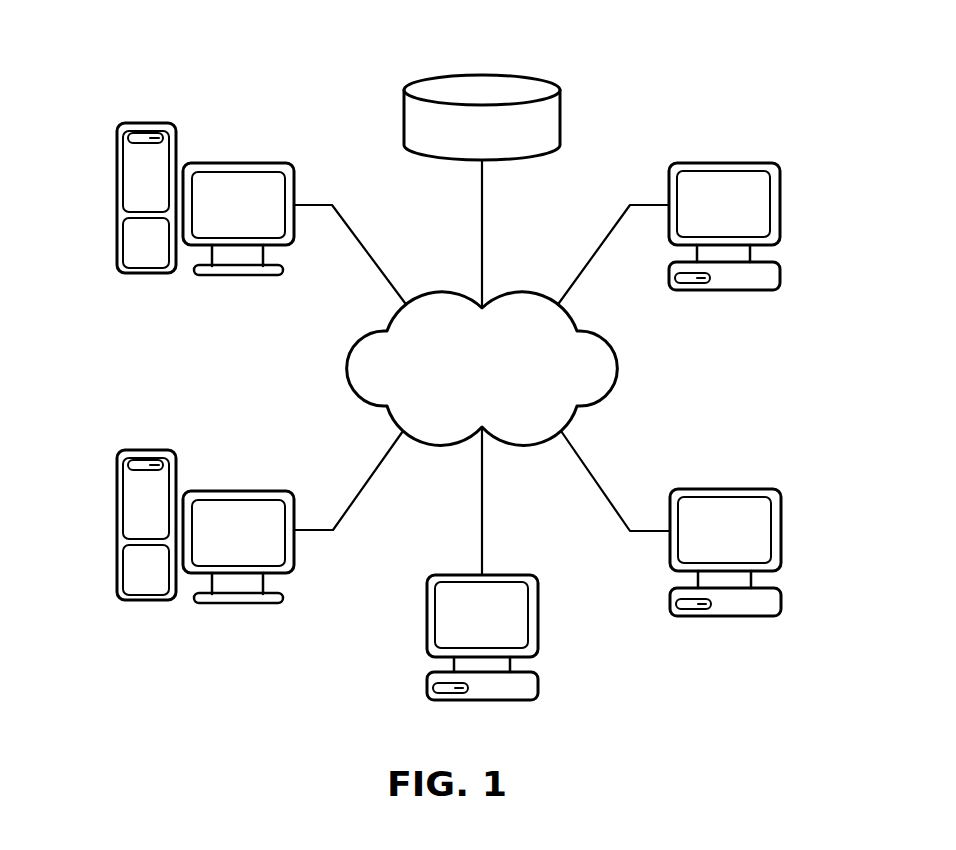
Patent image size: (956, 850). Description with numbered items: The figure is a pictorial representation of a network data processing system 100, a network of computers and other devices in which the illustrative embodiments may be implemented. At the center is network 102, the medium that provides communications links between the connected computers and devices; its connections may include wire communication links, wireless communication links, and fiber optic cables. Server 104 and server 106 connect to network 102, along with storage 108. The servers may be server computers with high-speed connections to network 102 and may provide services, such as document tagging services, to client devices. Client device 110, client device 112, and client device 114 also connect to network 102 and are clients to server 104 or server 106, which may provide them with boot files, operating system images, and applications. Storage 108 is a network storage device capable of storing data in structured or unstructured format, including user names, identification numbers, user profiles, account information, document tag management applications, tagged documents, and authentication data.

The network data processing system 100 is at (670, 61).
The network 102 is at (347, 366).
The server 104 is at (117, 499).
The server 106 is at (117, 172).
The storage 108 is at (404, 122).
The client device 110 is at (780, 207).
The client device 112 is at (781, 530).
The client device 114 is at (538, 617).